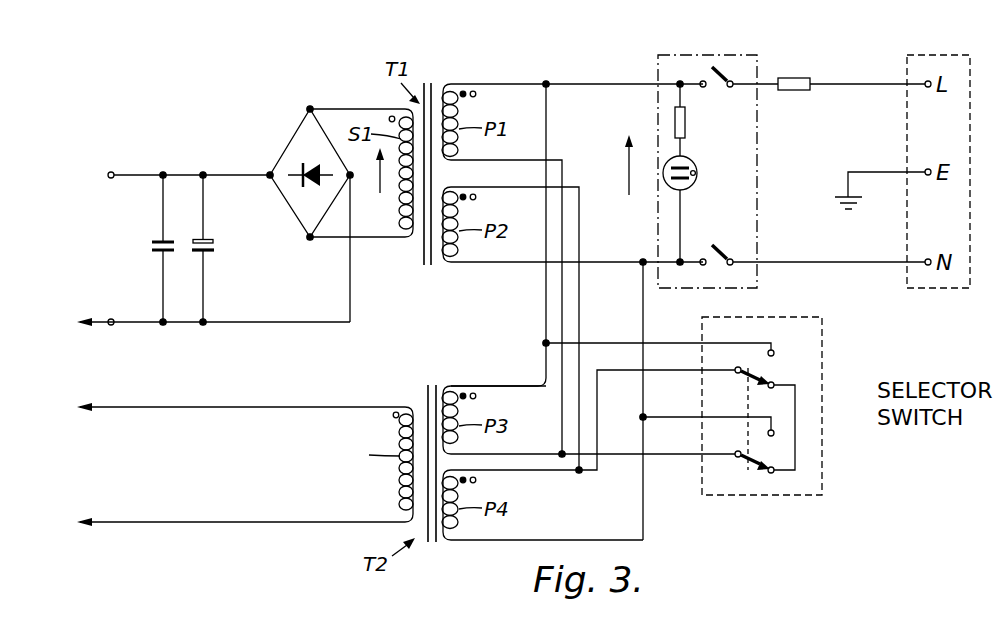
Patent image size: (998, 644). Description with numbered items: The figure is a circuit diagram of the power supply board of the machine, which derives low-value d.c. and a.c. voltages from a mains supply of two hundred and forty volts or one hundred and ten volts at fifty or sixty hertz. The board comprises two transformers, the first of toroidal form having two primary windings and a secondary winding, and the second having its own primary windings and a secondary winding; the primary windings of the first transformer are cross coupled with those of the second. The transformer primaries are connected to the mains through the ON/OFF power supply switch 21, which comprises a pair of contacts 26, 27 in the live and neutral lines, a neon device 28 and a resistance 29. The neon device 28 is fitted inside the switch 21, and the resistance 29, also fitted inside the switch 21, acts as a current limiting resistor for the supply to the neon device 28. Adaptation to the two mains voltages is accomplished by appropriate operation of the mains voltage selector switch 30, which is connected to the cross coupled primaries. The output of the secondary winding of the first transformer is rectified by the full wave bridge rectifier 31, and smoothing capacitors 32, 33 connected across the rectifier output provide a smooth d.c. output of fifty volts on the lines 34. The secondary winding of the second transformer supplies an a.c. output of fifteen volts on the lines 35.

The power supply switch 21 is at (773, 148).
The contact 26 is at (728, 75).
The contact 27 is at (718, 245).
The neon device 28 is at (690, 160).
The resistance 29 is at (674, 116).
The mains voltage selector switch 30 is at (823, 407).
The full wave bridge rectifier 31 is at (290, 152).
The smoothing capacitor 32 is at (211, 252).
The smoothing capacitor 33 is at (160, 240).
The lines 34 is at (139, 173).
The AC output terminals 35 is at (141, 406).